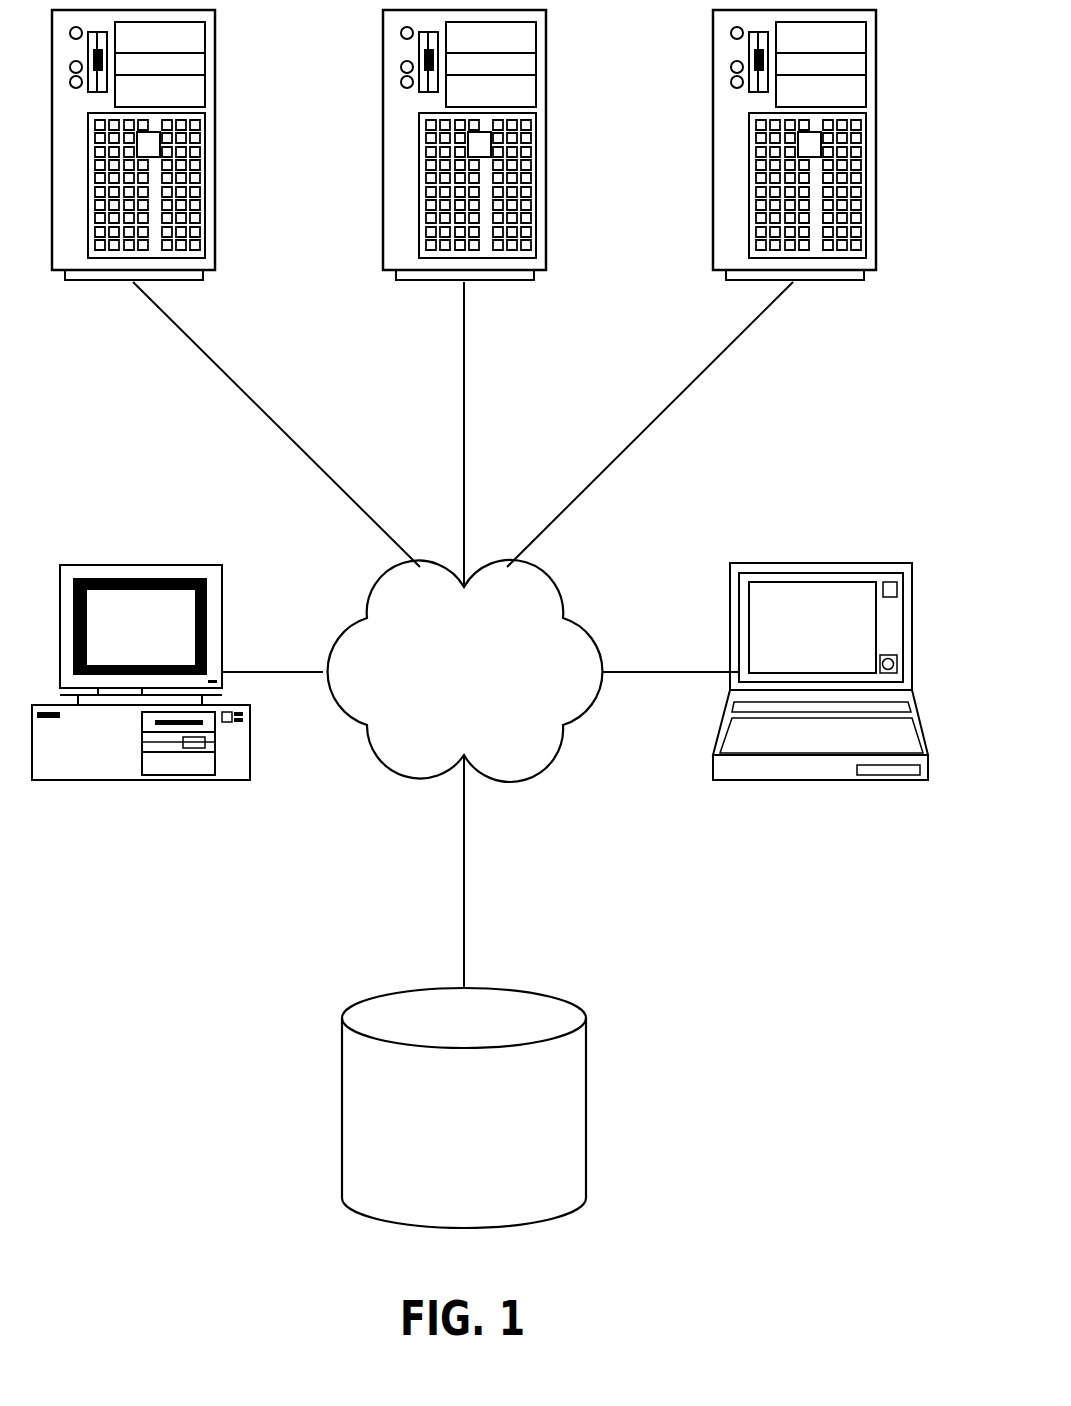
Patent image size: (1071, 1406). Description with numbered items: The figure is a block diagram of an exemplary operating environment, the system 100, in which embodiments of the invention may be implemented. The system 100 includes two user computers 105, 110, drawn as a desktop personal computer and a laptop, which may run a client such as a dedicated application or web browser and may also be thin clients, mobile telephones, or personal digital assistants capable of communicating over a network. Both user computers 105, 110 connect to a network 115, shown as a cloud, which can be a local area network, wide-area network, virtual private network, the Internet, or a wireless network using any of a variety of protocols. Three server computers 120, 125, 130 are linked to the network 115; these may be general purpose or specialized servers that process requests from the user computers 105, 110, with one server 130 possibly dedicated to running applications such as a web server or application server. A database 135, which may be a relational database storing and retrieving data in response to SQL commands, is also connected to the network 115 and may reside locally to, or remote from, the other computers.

The system 100 is at (257, 932).
The user computer 105 is at (230, 782).
The user computer 110 is at (872, 782).
The network 115 is at (547, 758).
The server computer 120 is at (190, 282).
The server computer 125 is at (521, 282).
The server computer 130 is at (851, 282).
The database 135 is at (547, 1223).